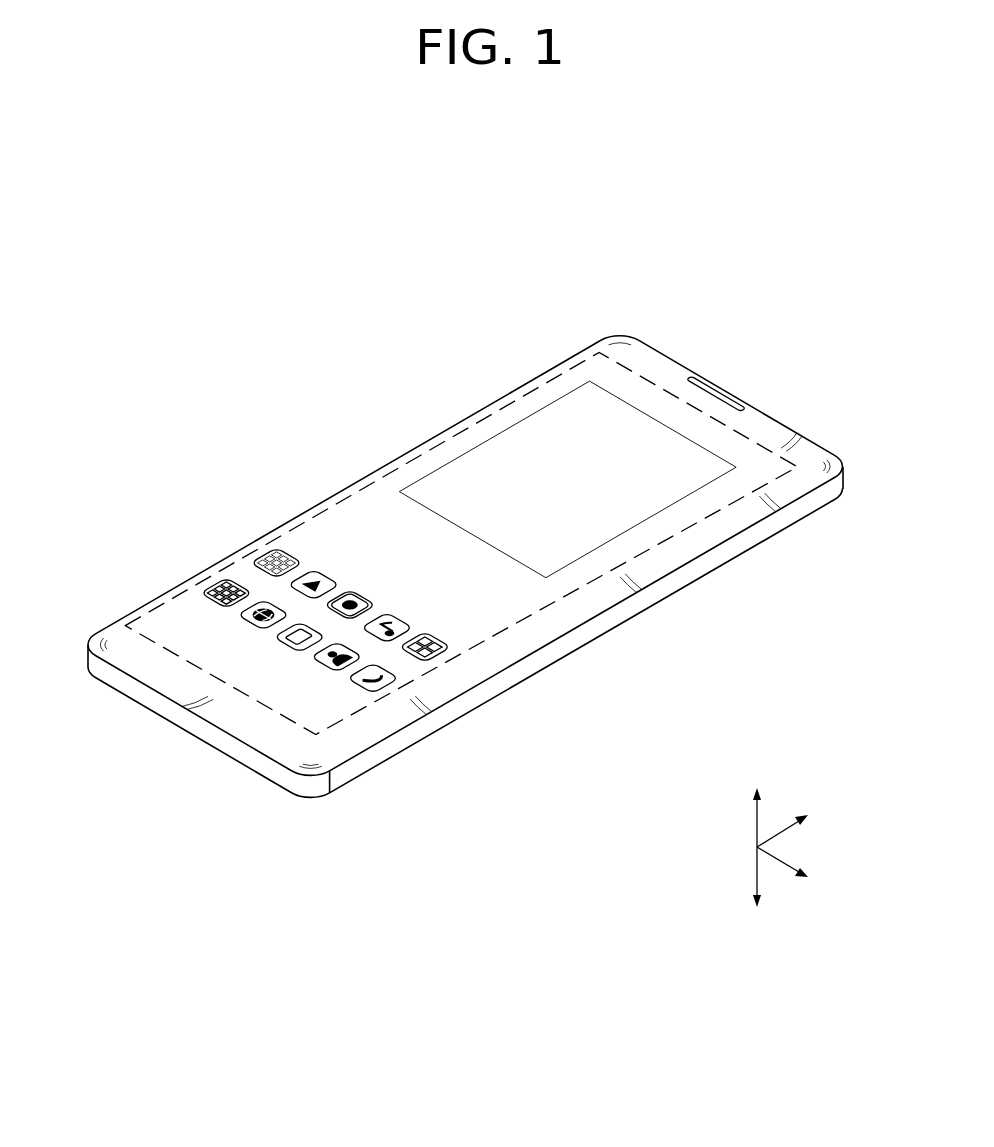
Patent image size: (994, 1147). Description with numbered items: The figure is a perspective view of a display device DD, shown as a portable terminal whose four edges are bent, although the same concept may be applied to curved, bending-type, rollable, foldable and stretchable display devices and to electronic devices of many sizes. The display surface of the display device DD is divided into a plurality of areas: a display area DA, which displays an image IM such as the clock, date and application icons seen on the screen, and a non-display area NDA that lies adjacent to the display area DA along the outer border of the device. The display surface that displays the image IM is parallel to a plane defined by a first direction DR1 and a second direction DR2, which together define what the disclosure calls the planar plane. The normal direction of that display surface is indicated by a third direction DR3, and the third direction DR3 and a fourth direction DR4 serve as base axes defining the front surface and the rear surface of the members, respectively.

The display device DD is at (763, 313).
The display area DA is at (474, 534).
The non-display area NDA is at (461, 546).
The image IM is at (567, 479).
The first direction DR1 is at (806, 865).
The second direction DR2 is at (806, 822).
The third direction DR3 is at (756, 802).
The fourth direction DR4 is at (756, 891).